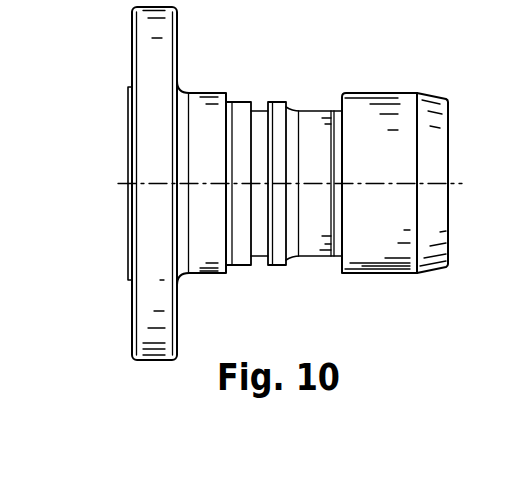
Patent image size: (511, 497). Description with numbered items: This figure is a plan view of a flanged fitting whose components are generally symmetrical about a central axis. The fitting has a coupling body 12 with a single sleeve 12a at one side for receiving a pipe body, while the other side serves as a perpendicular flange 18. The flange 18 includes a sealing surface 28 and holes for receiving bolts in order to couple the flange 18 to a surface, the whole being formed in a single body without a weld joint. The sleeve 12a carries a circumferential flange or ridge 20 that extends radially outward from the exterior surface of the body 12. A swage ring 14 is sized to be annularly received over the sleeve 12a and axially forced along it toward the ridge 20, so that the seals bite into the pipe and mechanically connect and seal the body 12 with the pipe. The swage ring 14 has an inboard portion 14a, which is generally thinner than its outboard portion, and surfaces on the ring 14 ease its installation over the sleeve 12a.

The coupling body 12 is at (315, 238).
The first sleeve 12a is at (384, 257).
The swage ring 14 is at (427, 247).
The inboard portion 14a is at (450, 128).
The flange 18 is at (153, 78).
The circumferential flange or ridge 20 is at (275, 112).
The sealing surface 28 is at (128, 270).